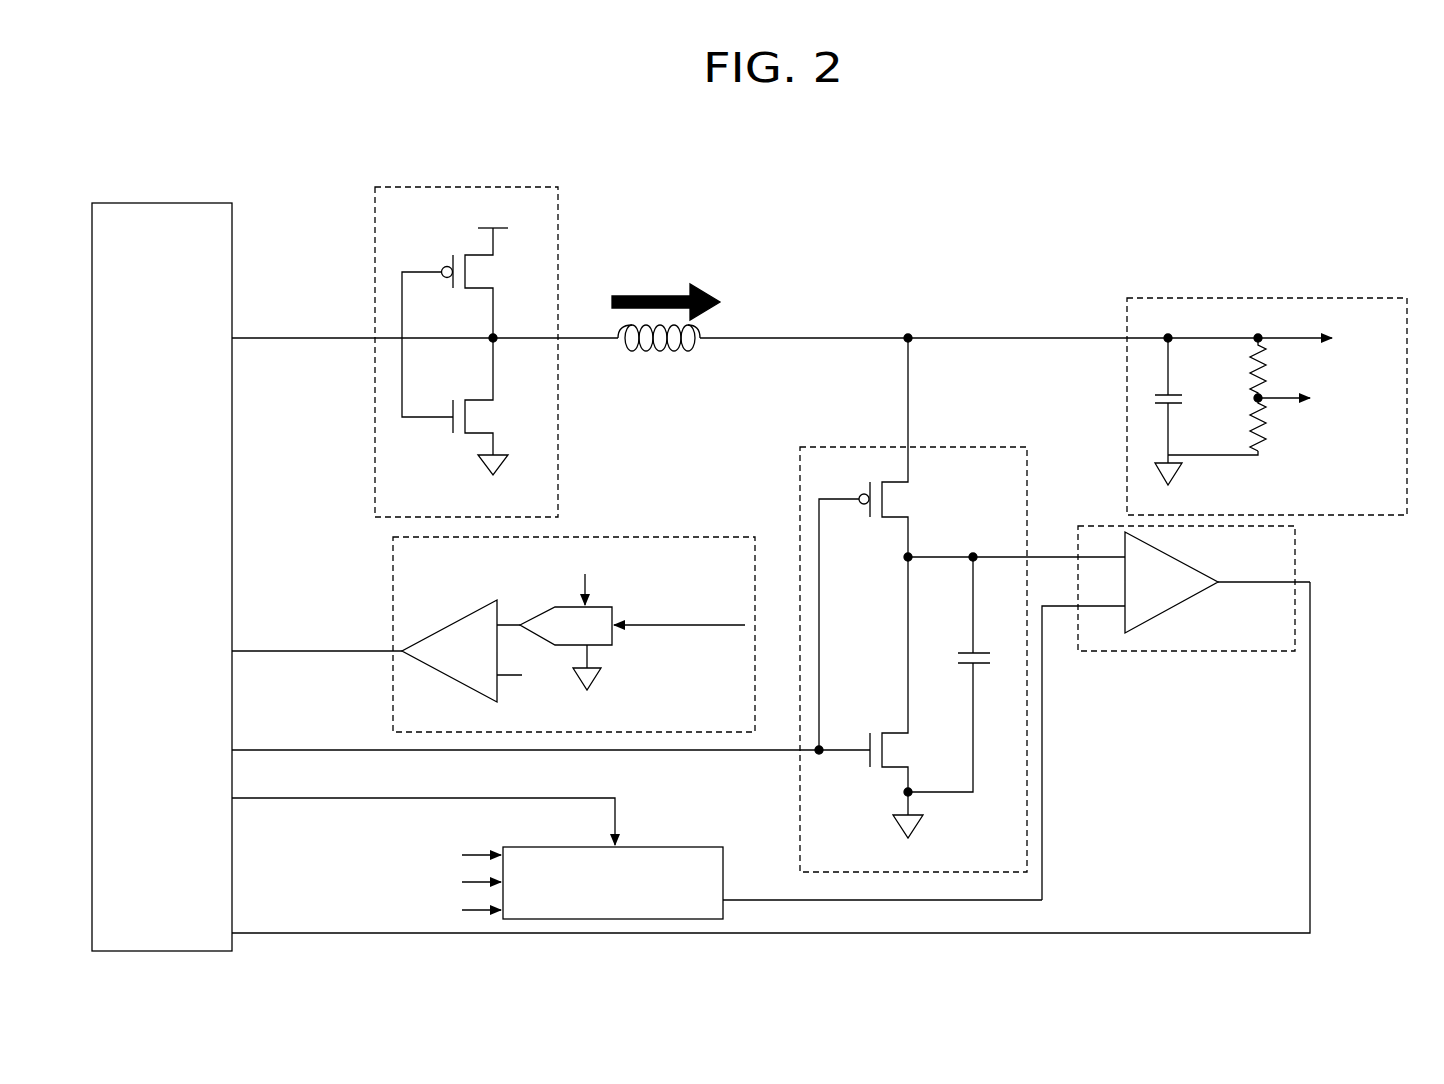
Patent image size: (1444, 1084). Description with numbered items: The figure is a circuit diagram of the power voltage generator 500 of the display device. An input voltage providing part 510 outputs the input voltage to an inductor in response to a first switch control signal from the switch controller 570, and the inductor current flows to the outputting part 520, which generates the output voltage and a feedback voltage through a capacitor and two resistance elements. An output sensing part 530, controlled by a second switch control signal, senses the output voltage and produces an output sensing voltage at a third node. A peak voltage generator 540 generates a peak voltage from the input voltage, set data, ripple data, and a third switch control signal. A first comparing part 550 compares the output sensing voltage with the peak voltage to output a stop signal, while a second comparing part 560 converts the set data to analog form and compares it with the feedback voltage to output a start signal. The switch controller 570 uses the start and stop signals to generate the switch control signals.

The power voltage generator 500 is at (1418, 172).
The input voltage providing part 510 is at (465, 187).
The outputting part 520 is at (1264, 298).
The output sensing part 530 is at (840, 447).
The peak voltage generator 540 is at (692, 847).
The first comparing part 550 is at (1096, 526).
The second comparing part 560 is at (648, 537).
The switch controller 570 is at (160, 203).